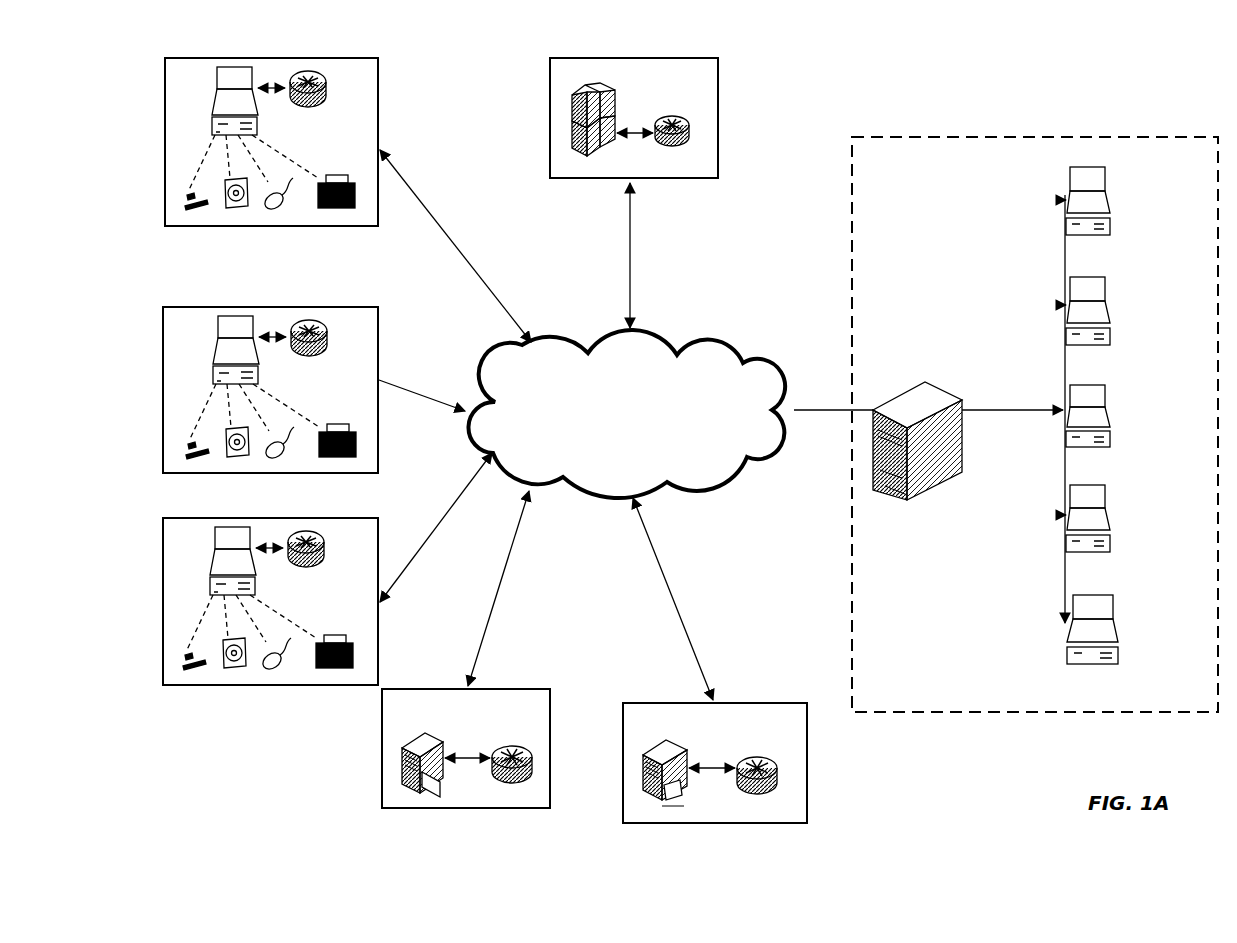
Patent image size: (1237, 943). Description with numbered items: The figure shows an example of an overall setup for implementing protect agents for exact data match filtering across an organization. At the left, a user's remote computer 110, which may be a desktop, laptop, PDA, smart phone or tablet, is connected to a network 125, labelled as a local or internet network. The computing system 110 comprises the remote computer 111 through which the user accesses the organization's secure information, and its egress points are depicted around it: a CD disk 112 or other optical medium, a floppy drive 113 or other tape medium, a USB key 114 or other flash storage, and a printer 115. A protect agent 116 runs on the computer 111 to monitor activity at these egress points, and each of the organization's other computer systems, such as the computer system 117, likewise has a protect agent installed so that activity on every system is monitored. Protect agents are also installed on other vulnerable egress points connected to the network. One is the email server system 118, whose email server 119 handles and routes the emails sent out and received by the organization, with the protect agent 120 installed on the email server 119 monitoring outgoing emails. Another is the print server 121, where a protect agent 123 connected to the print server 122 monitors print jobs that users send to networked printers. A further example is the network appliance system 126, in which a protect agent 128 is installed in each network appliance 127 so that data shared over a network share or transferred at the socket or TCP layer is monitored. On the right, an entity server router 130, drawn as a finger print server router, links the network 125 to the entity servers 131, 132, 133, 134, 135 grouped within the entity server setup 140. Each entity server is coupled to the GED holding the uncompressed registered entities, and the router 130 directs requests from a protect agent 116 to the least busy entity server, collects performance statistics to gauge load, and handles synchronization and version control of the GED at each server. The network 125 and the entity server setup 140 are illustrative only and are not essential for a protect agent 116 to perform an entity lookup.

The remote computer 110 is at (165, 118).
The remote computer 111 is at (217, 77).
The CD disk 112 is at (196, 212).
The floppy drive 113 is at (238, 210).
The USB key 114 is at (290, 210).
The printer 115 is at (358, 210).
The protect agent 116 is at (327, 95).
The computer system 117 is at (165, 590).
The email server system 118 is at (437, 808).
The email server 119 is at (432, 735).
The protect agent 120 is at (502, 743).
The print server 121 is at (690, 823).
The print server 122 is at (678, 745).
The protect agent 123 is at (745, 756).
The network 125 is at (752, 358).
The network appliance system 126 is at (550, 98).
The network appliance 127 is at (600, 92).
The protect agent 128 is at (665, 115).
The entity server router 130 is at (932, 380).
The entity server 131 is at (1108, 190).
The entity server 132 is at (1108, 300).
The entity server 133 is at (1108, 405).
The entity server 134 is at (1108, 505).
The entity server 135 is at (1115, 618).
The entity server setup 140 is at (1010, 137).